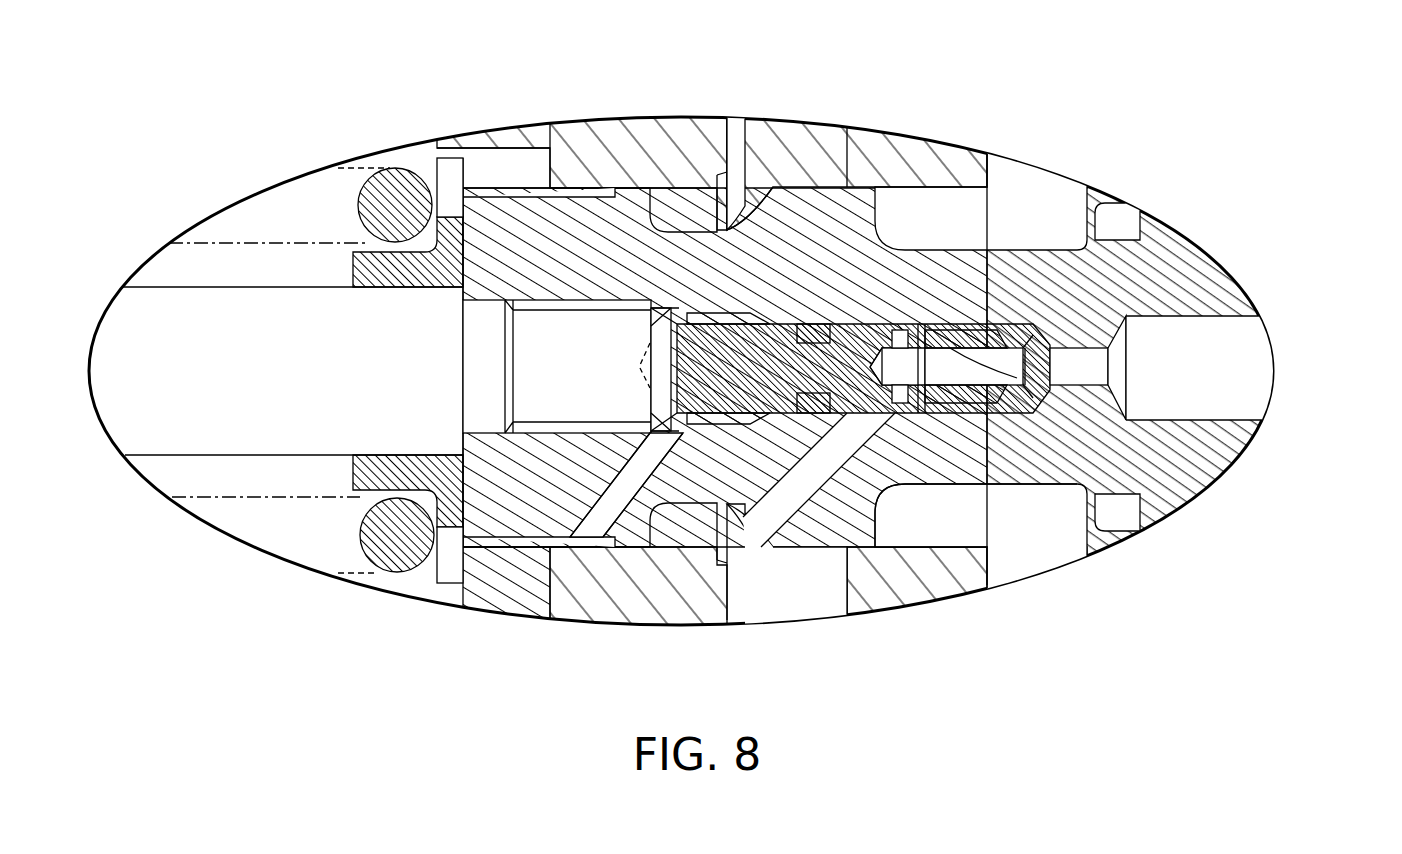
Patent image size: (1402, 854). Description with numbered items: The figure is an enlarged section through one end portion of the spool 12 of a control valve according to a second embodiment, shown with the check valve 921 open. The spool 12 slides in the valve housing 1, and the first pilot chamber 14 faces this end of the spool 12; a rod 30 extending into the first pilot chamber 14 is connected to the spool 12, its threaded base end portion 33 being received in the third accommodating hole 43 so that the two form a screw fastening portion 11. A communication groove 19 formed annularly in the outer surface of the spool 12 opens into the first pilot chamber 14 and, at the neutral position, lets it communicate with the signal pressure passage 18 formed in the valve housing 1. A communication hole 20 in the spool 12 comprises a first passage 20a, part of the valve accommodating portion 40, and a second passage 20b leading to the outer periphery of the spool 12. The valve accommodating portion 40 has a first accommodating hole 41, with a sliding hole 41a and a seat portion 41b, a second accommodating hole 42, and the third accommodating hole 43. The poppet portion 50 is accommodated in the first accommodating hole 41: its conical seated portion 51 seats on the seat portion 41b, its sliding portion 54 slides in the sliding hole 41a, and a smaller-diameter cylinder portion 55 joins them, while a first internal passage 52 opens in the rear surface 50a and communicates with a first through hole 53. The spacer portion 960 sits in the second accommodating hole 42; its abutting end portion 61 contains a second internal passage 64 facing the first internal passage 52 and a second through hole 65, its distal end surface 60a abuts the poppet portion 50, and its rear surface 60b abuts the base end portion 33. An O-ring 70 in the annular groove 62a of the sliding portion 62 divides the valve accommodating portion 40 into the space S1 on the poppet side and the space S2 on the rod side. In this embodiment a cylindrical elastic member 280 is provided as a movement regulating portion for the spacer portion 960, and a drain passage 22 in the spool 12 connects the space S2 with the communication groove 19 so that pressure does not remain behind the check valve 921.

The valve housing 1 is at (675, 132).
The screw fastening portion 11 is at (527, 445).
The spool 12 is at (1169, 222).
The first pilot chamber 14 is at (470, 148).
The signal pressure passage 18 is at (787, 600).
The communication groove 19 is at (530, 545).
The communication hole 20 is at (1195, 318).
The first passage 20a is at (1212, 468).
The second passage 20b is at (925, 490).
The drain passage 22 is at (612, 425).
The rod 30 is at (438, 306).
The base end portion 33 is at (552, 545).
The valve accommodating portion 40 is at (683, 432).
The first accommodating hole 41 is at (1097, 662).
The sliding hole 41a is at (1073, 486).
The seat portion 41b is at (1105, 531).
The second accommodating hole 42 is at (752, 418).
The third accommodating hole 43 is at (560, 410).
The poppet portion 50 is at (1035, 340).
The rear surface 50a is at (930, 413).
The seated portion 51 is at (1100, 235).
The first internal passage 52 is at (1048, 345).
The first through hole 53 is at (1042, 325).
The sliding portion 54 is at (1000, 413).
The cylinder portion 55 is at (1025, 413).
The distal end surface 60a is at (1052, 373).
The rear surface 60b is at (640, 335).
The abutting end portion 61 is at (960, 348).
The sliding portion 62 is at (815, 323).
The annular groove 62a is at (815, 416).
The second internal passage 64 is at (970, 413).
The second through hole 65 is at (915, 418).
The O-ring 70 is at (907, 323).
The cylindrical elastic member 280 is at (741, 210).
The check valve 921 is at (985, 323).
The spacer portion 960 is at (737, 310).
The space S1 is at (995, 345).
The space S2 is at (665, 345).